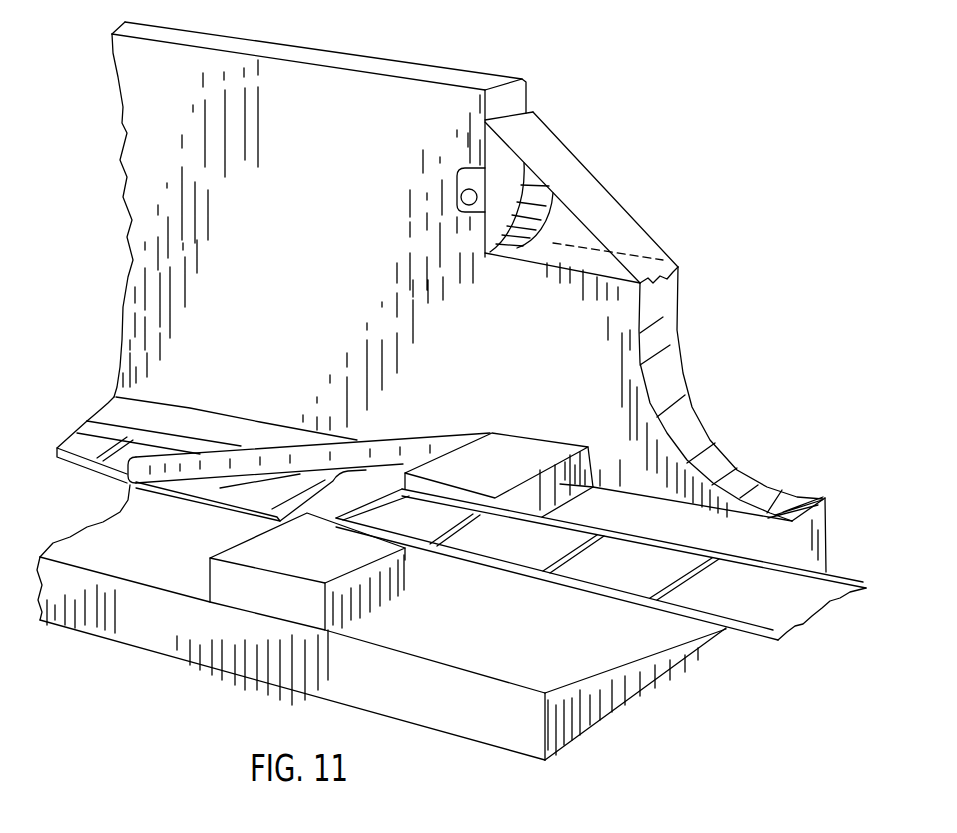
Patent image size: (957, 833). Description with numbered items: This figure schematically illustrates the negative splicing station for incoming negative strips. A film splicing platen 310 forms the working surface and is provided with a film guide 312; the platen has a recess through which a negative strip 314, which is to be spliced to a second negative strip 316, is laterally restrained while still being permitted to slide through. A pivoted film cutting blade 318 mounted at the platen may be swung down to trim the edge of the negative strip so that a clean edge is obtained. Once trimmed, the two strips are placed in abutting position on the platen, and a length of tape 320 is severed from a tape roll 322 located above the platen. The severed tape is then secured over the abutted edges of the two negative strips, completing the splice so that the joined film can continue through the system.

The film splicing platen 310 is at (240, 642).
The film guide 312 is at (335, 562).
The negative strip 314 is at (650, 576).
The negative strip 316 is at (263, 485).
The pivoted film cutting blade 318 is at (395, 453).
The tape 320 is at (607, 223).
The tape roll 322 is at (500, 223).